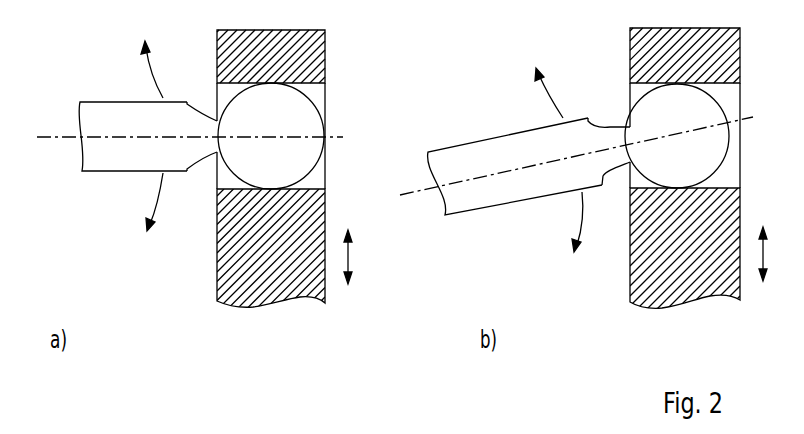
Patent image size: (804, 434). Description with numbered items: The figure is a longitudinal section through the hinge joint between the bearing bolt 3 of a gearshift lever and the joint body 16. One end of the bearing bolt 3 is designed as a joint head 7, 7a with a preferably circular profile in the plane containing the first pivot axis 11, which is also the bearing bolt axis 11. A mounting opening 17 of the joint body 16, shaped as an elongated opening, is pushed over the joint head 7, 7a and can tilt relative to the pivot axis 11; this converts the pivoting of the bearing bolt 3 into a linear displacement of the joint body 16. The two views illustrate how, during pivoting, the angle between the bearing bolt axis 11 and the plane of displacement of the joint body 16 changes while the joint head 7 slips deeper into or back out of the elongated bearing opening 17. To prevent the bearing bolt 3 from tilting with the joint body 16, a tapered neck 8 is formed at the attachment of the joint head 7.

The bearing bolt 3 is at (107, 172).
The joint head 7 is at (507, 136).
The joint head 7a is at (315, 123).
The tapered neck 8 is at (201, 150).
The first pivot axis 11 is at (63, 137).
The joint body 16 is at (327, 52).
The mounting opening 17 is at (320, 175).